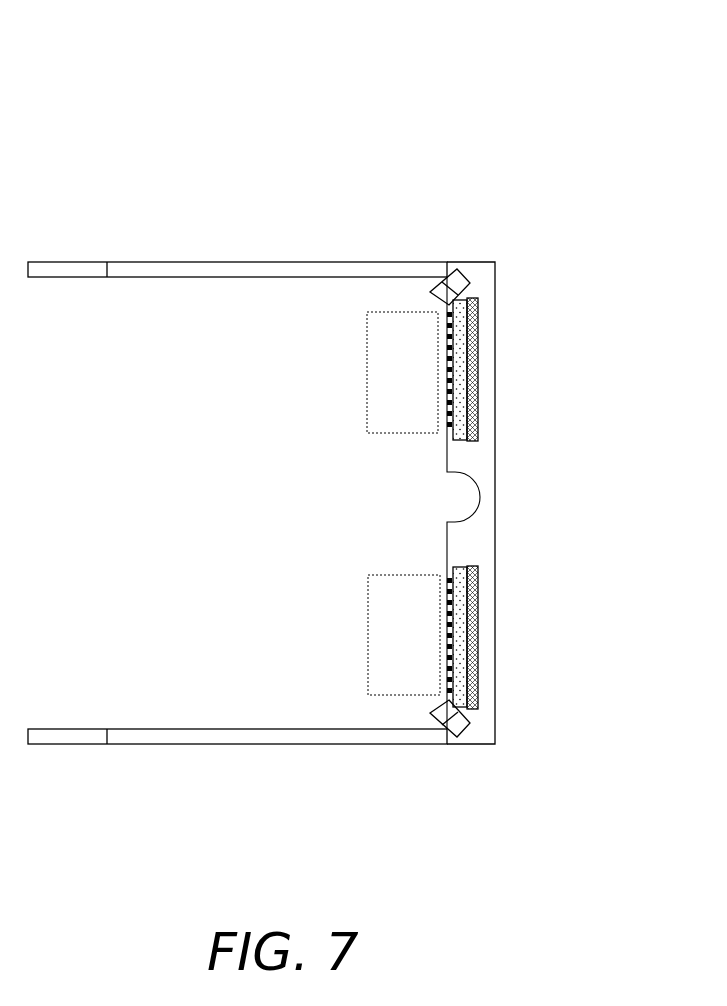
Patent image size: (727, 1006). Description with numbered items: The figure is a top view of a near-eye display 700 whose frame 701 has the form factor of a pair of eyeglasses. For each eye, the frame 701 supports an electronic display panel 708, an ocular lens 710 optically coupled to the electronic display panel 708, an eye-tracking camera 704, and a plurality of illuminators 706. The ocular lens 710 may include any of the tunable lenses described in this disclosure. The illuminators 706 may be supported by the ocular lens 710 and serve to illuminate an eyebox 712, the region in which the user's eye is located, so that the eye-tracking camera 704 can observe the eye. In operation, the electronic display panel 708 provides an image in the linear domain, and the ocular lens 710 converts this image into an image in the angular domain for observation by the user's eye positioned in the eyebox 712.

The near-eye display 700 is at (275, 104).
The frame 701 is at (142, 263).
The eye-tracking camera 704 is at (452, 263).
The illuminators 706 is at (458, 355).
The electronic display panel 708 is at (477, 310).
The ocular lens 710 is at (456, 407).
The eyebox 712 is at (423, 382).